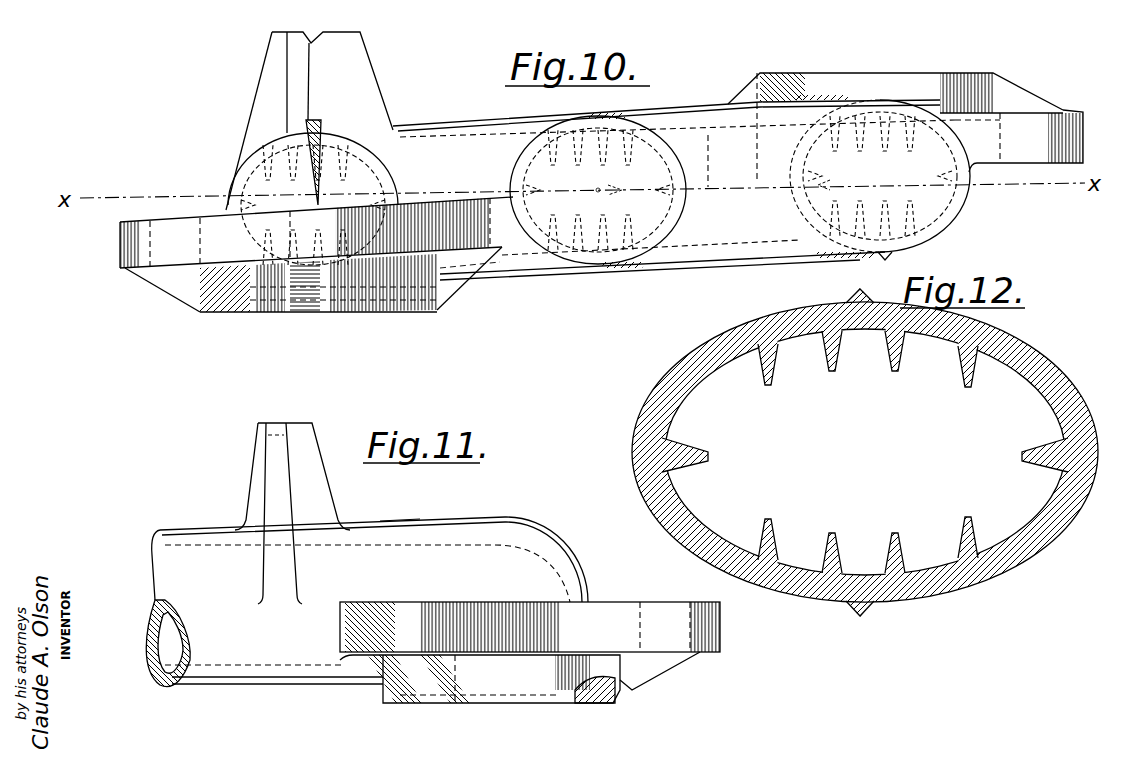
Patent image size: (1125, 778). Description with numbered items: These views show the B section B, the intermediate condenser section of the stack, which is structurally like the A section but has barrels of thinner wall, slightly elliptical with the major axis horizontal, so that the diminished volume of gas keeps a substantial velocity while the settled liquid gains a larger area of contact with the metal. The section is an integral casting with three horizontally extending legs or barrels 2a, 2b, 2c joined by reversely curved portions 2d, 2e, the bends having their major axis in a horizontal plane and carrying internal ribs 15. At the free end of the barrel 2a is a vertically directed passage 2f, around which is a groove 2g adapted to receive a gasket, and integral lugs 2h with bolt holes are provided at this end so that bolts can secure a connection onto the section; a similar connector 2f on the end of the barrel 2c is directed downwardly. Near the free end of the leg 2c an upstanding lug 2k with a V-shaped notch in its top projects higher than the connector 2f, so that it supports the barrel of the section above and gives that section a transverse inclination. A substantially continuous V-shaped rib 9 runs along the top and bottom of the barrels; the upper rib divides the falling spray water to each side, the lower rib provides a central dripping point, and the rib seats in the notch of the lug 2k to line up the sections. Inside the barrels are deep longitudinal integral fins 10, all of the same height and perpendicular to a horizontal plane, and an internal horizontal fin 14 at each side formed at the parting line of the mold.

In FIG. 10, the B section B is at (468, 110).
In FIG. 11, the B section B is at (458, 502).
In FIG. 12, the B section B is at (1046, 336).
In FIG. 10, the barrel 2a is at (958, 210).
In FIG. 10, the barrel 2b is at (535, 178).
In FIG. 10, the barrel 2c is at (258, 192).
In FIG. 11, the barrel 2c is at (252, 519).
In FIG. 10, the reversely curved portion 2d is at (537, 262).
In FIG. 11, the reversely curved portion 2d is at (168, 643).
In FIG. 10, the reversely curved portion 2e is at (785, 250).
In FIG. 11, the reversely curved portion 2e is at (277, 680).
In FIG. 10, the passage 2f is at (200, 308).
In FIG. 11, the passage 2f is at (616, 700).
In FIG. 10, the groove 2g is at (228, 312).
In FIG. 11, the groove 2g is at (590, 705).
In FIG. 10, the lug 2h is at (262, 78).
In FIG. 11, the lug 2h is at (722, 620).
In FIG. 11, the lug 2k is at (256, 465).
In FIG. 10, the V-shaped rib 9 is at (318, 128).
In FIG. 11, the V-shaped rib 9 is at (398, 530).
In FIG. 12, the V-shaped rib 9 is at (864, 292).
In FIG. 10, the fin 10 is at (597, 172).
In FIG. 10, the horizontal fin 14 is at (602, 190).
In FIG. 12, the horizontal fin 14 is at (697, 455).
In FIG. 12, the internal rib 15 is at (888, 362).